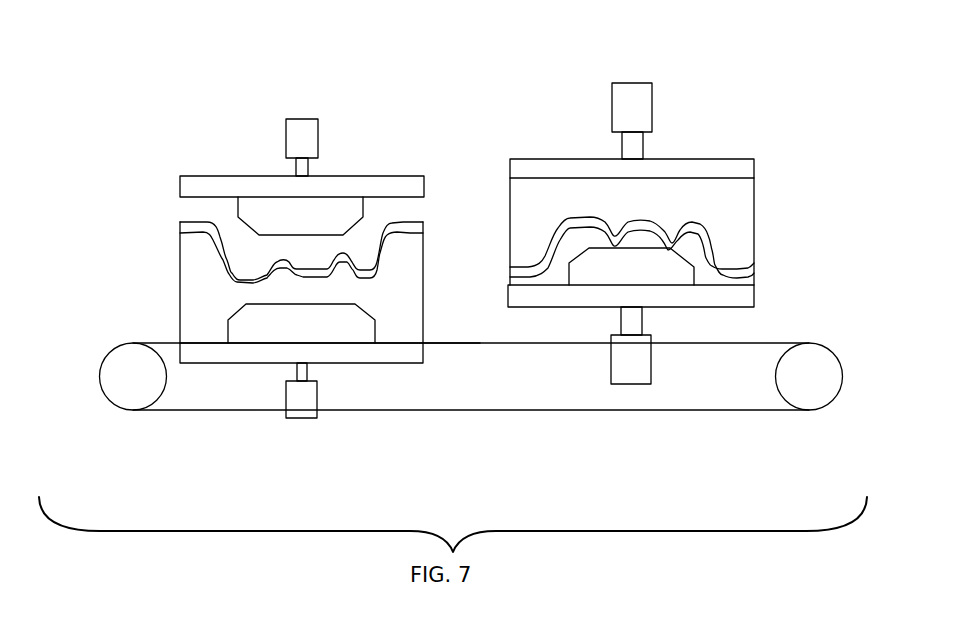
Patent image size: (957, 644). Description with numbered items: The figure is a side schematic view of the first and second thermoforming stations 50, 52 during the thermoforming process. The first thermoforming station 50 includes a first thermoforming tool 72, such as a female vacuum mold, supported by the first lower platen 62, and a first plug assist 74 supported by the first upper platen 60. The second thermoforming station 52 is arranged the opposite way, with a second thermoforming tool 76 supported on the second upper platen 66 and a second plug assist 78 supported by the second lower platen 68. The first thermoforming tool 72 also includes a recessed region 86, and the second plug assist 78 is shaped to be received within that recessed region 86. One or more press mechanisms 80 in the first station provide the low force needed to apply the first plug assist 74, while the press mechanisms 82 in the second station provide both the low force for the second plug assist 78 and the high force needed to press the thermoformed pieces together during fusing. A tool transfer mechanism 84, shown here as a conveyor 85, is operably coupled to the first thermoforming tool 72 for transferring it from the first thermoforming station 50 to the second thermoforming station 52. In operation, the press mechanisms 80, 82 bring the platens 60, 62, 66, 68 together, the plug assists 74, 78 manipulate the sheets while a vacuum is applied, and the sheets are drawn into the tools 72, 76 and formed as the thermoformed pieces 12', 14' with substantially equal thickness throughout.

The first thermoforming station 50 is at (252, 53).
The second thermoforming station 52 is at (546, 53).
The first thermoformed piece 12' is at (272, 237).
The second thermoformed piece 14' is at (671, 266).
The first upper platen 60 is at (345, 176).
The first lower platen 62 is at (402, 357).
The second upper platen 66 is at (712, 159).
The second lower platen 68 is at (722, 307).
The first thermoforming tool 72 is at (178, 291).
The first plug assist 74 is at (367, 212).
The second thermoforming tool 76 is at (754, 200).
The second plug assist 78 is at (690, 262).
The press mechanisms 80 is at (305, 119).
The press mechanisms 82 is at (652, 105).
The tool transfer mechanism 84 is at (113, 328).
The conveyor 85 is at (445, 343).
The recessed region 86 is at (302, 324).